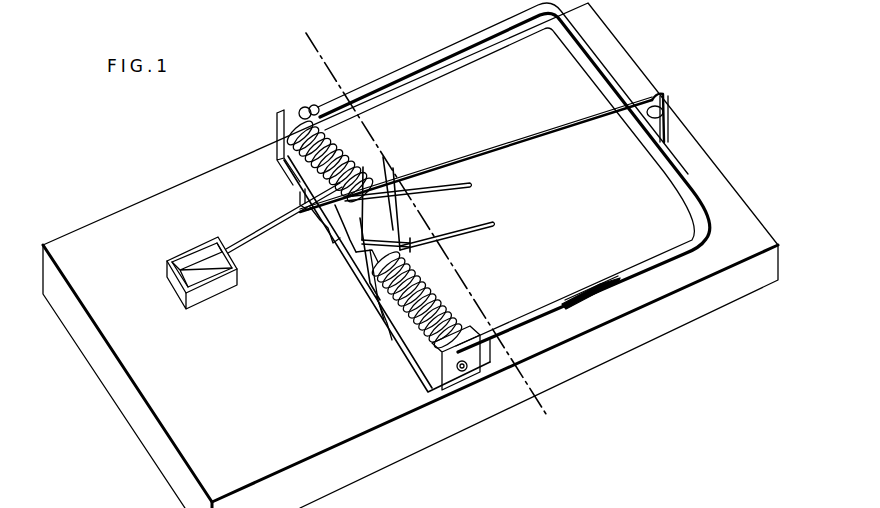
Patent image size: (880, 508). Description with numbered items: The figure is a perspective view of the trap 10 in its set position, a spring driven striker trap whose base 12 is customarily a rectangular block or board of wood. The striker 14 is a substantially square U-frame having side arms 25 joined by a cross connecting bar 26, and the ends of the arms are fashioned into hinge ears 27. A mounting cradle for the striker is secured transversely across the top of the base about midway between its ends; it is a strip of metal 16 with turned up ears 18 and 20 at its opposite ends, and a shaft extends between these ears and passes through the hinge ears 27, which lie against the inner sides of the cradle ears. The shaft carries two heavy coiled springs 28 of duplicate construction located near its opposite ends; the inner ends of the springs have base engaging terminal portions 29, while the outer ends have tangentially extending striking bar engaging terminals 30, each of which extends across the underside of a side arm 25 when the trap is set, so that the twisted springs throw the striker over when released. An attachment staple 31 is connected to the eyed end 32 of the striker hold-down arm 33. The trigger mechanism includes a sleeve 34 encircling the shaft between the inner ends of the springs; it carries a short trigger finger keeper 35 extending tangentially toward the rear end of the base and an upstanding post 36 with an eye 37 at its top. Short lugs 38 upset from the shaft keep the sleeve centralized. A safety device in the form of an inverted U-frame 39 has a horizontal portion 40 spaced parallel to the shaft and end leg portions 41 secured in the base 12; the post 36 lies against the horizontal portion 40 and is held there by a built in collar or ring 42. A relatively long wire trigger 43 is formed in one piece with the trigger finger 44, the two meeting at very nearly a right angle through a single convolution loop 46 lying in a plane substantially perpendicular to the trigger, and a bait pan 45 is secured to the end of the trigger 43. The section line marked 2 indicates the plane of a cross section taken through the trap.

The section line 2- 2 is at (335, 50).
The trap 10 is at (410, 255).
The base 12 is at (142, 419).
The striker 14 is at (537, 177).
The strip of metal 16 is at (387, 284).
The turned up ear 18 is at (277, 114).
The turned up ear 20 is at (436, 372).
The side arm 25 is at (537, 177).
The cross connecting bar 26 is at (690, 184).
The hinge ear 27 is at (305, 108).
The coiled spring 28 is at (443, 308).
The base engaging terminal portion 29 is at (470, 242).
The striking bar engaging terminal 30 is at (600, 290).
The attachment staple 31 is at (669, 128).
The eyed end 32 is at (670, 95).
The striker hold-down arm 33 is at (508, 137).
The sleeve 34 is at (368, 283).
The trigger finger keeper 35 is at (412, 250).
The upstanding post 36 is at (401, 176).
The eye 37 is at (297, 197).
The short lug 38 is at (378, 300).
The inverted U-frame 39 is at (350, 235).
The horizontal portion 40 is at (328, 237).
The end leg portion 41 is at (387, 323).
The built in collar or ring 42 is at (372, 250).
The trigger 43 is at (257, 234).
The trigger finger 44 is at (408, 212).
The pan 45 is at (172, 277).
The single convolution loop 46 is at (355, 177).